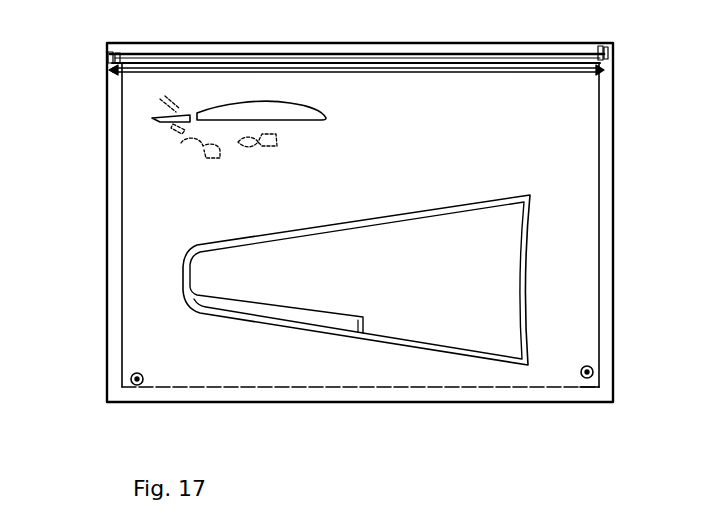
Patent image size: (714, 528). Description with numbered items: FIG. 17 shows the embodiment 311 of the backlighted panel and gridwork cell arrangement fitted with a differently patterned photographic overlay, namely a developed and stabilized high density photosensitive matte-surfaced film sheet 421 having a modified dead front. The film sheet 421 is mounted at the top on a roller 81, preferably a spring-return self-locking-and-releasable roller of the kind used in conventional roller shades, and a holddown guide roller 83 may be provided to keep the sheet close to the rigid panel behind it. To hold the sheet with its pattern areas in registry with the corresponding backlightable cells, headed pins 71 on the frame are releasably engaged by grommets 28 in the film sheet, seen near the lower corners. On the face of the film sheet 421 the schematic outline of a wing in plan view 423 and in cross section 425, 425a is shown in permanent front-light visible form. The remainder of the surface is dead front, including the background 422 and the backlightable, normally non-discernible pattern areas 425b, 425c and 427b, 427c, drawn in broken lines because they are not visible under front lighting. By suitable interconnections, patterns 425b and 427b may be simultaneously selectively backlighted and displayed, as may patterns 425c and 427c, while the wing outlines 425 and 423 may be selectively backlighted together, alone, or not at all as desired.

The embodiment 311 is at (619, 127).
The film sheet 421 is at (590, 181).
The background 422 is at (220, 380).
The wing in plan view 423 is at (522, 279).
The wing in cross section 425 is at (303, 113).
The wing cross section portion 425a is at (152, 118).
The backlightable pattern area 425b is at (175, 106).
The backlightable pattern area 425c is at (173, 134).
The backlightable pattern area 427b is at (260, 143).
The backlightable pattern area 427c is at (207, 150).
The roller 81 is at (530, 56).
The holddown guide roller 83 is at (418, 73).
The headed pins 71 is at (592, 367).
The grommets 28 is at (590, 378).